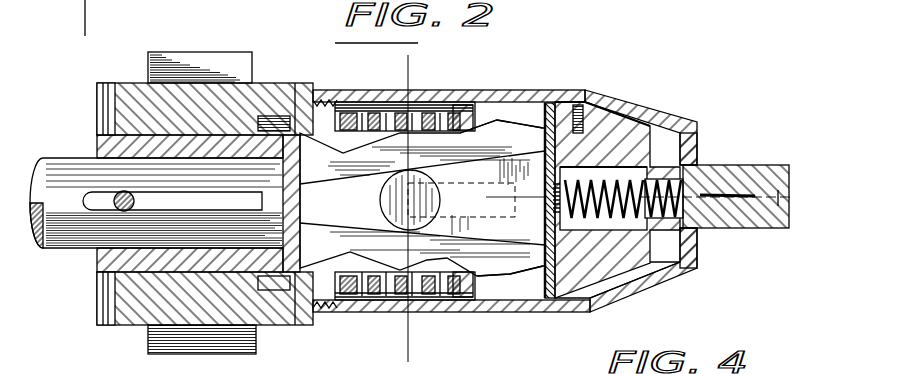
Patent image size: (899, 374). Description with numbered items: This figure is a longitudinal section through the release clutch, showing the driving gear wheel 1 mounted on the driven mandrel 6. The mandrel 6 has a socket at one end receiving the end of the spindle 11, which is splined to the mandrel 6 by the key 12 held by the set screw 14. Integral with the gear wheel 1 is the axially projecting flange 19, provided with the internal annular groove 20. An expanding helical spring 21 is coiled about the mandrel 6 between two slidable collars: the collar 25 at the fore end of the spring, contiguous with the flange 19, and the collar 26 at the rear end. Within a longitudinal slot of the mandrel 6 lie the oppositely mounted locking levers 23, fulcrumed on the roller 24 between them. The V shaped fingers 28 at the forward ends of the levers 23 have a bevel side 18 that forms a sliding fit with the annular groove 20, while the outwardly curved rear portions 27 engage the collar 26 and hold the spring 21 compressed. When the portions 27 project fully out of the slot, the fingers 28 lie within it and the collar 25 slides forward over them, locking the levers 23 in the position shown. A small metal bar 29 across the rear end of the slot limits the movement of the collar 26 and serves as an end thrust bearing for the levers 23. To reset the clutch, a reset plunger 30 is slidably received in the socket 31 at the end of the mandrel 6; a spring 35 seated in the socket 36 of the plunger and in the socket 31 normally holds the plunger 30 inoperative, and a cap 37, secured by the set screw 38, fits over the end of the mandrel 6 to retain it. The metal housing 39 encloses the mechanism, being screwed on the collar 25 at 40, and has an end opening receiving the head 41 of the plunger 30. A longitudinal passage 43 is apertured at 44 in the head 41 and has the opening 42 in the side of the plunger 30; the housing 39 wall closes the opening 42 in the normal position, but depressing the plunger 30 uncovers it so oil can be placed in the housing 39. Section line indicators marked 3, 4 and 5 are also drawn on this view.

The gear wheel 1 is at (150, 340).
The section line 3- 3 is at (419, 341).
The section line 4- 4 is at (502, 212).
The section line 5- 5 is at (76, 26).
The mandrel 6 is at (107, 261).
The spindle 11 is at (67, 172).
The key 12 is at (105, 207).
The set screw 14 is at (125, 190).
The bevel side 18 is at (335, 110).
The flange 19 is at (267, 83).
The annular groove 20 is at (273, 118).
The expanding helical spring 21 is at (390, 278).
The locking levers 23 is at (397, 127).
The roller 24 is at (398, 229).
The collar 25 is at (393, 130).
The collar 26 is at (445, 122).
The outwardly curved rear portions 27 is at (513, 120).
The V shaped fingers 28 is at (319, 103).
The metal bar 29 is at (590, 307).
The reset plunger 30 is at (700, 230).
The socket 31 is at (662, 277).
The spring 35 is at (603, 182).
The socket 36 is at (695, 163).
The cap 37 is at (598, 117).
The set screw 38 is at (585, 90).
The metal housing 39 is at (640, 290).
The screw connection 40 is at (313, 307).
The head 41 is at (791, 165).
The opening 42 is at (699, 166).
The passage 43 is at (752, 198).
The aperture 44 is at (781, 205).